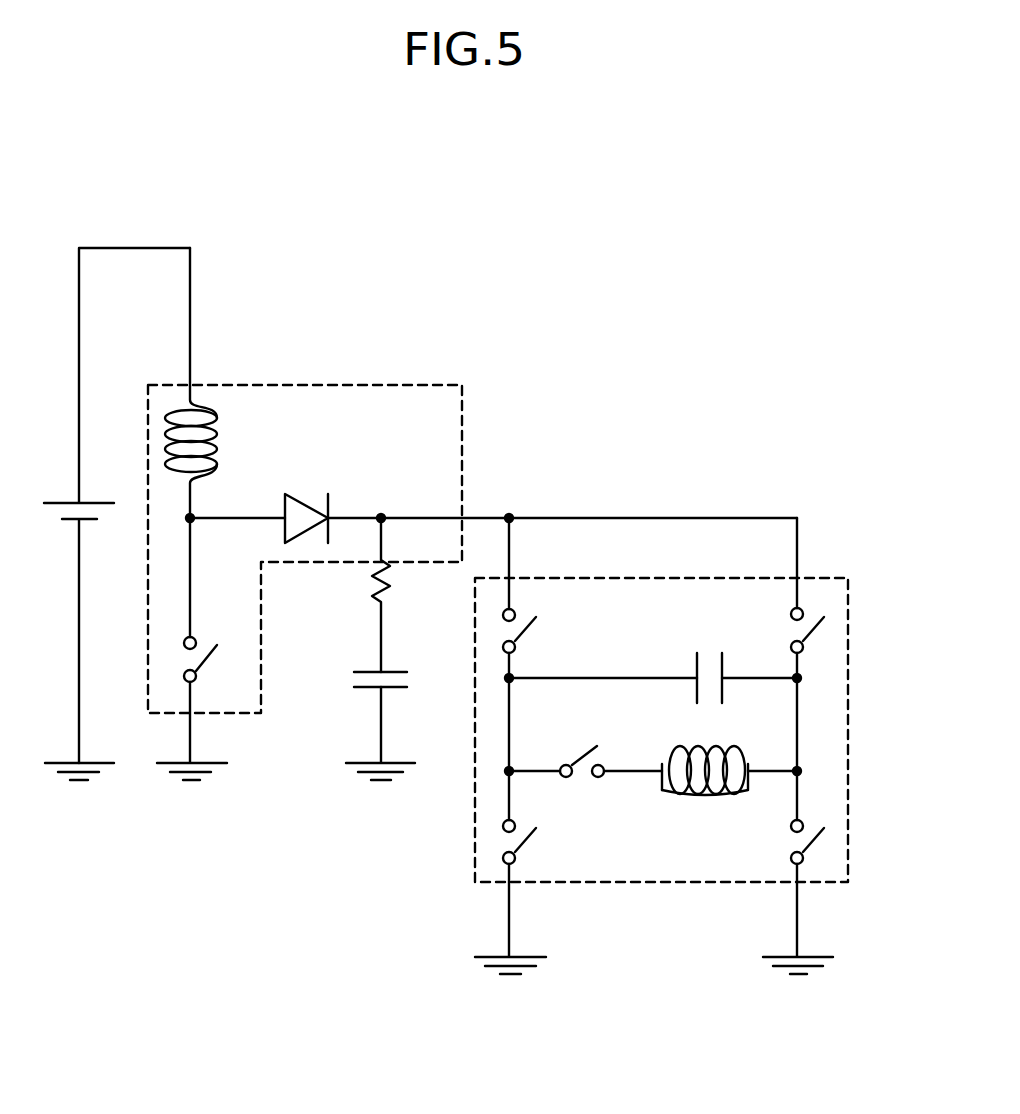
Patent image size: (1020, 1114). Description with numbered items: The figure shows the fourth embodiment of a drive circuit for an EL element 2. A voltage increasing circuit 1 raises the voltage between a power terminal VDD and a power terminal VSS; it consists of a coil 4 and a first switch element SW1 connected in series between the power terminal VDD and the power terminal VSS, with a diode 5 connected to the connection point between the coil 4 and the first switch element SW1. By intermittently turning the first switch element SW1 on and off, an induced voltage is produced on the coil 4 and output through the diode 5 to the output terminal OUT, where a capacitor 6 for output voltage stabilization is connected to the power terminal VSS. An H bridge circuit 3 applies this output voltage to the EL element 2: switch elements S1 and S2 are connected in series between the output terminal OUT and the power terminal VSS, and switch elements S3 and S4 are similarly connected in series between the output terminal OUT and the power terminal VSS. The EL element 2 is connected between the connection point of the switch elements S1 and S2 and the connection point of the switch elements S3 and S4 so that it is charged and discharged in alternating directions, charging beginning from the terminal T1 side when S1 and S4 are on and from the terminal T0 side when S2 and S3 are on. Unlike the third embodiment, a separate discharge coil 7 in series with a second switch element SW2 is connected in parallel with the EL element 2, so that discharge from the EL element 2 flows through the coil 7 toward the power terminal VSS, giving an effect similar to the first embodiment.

The voltage increasing circuit 1 is at (336, 385).
The EL element 2 is at (712, 705).
The H bridge circuit 3 is at (663, 878).
The coil 4 is at (218, 466).
The diode 5 is at (305, 500).
The capacitor 6 is at (360, 672).
The discharge coil 7 is at (678, 797).
The first switch element SW1 is at (205, 668).
The second switch element SW2 is at (568, 779).
The switch element S1 is at (504, 650).
The switch element S2 is at (500, 830).
The switch element S3 is at (805, 592).
The switch element S4 is at (805, 845).
The terminal T0 is at (770, 680).
The terminal T1 is at (603, 678).
The power terminal VDD is at (190, 248).
The power terminal VSS is at (80, 781).
The output terminal OUT is at (490, 518).